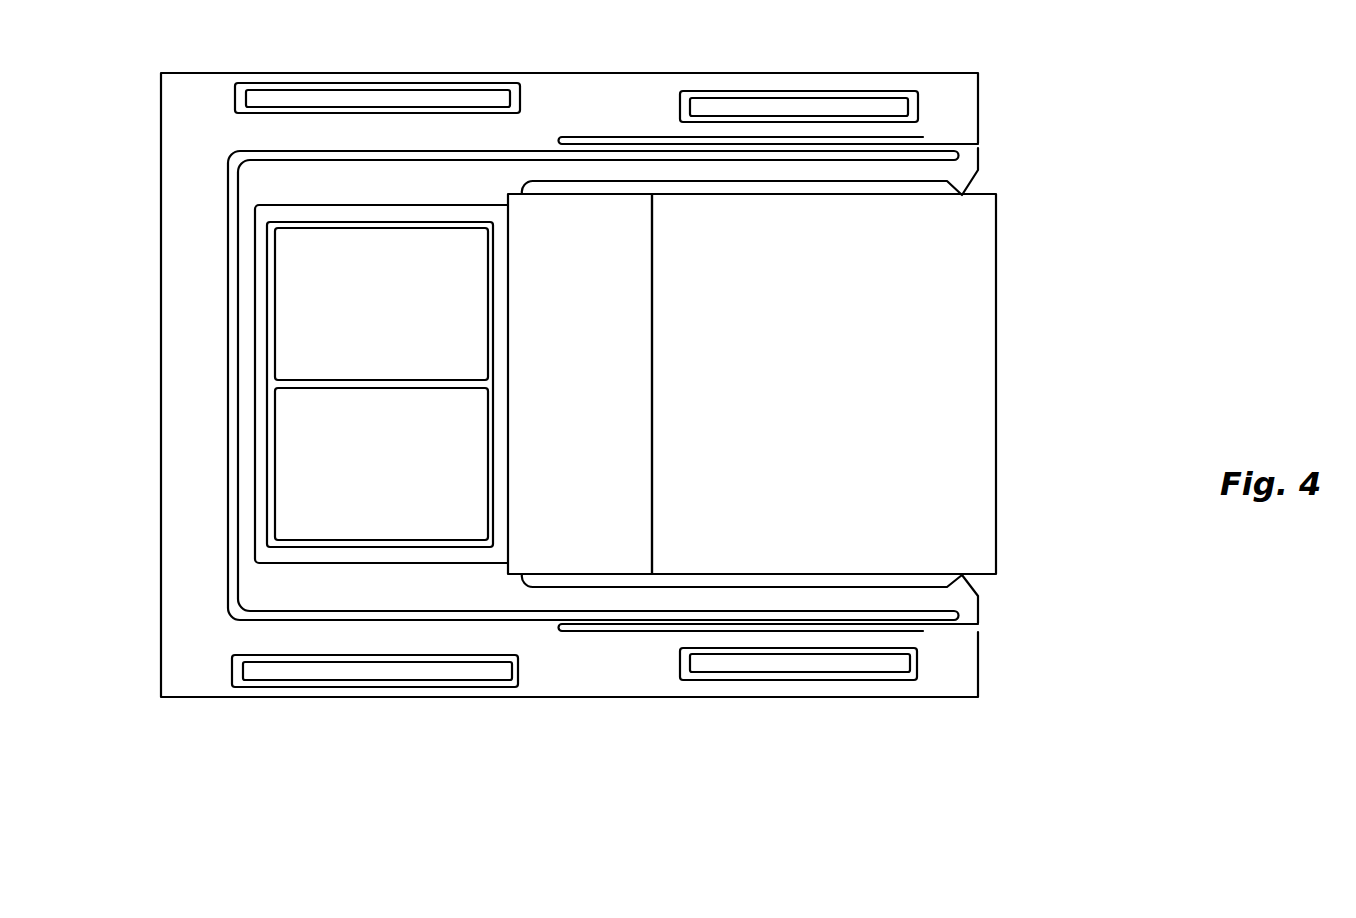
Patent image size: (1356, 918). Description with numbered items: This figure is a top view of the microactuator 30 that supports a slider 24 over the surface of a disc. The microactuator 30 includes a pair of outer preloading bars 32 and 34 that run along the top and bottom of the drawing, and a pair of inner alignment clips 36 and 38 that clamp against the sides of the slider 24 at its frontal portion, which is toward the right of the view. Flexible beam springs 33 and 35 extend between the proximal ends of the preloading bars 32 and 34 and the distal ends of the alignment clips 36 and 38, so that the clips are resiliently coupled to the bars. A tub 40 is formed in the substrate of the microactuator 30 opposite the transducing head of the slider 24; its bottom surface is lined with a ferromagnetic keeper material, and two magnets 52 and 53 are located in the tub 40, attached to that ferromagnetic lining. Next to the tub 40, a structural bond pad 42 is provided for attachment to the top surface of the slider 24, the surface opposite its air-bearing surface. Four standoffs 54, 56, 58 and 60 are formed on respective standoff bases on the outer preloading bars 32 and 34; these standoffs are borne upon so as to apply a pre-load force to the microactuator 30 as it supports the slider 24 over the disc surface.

The slider 24 is at (980, 357).
The microactuator 30 is at (126, 348).
The outer preloading bar 32 is at (970, 95).
The flexible beam spring 33 is at (922, 138).
The outer preloading bar 34 is at (962, 678).
The flexible beam spring 35 is at (942, 628).
The inner alignment clip 36 is at (985, 175).
The inner alignment clip 38 is at (975, 590).
The tub 40 is at (260, 220).
The structural bond pad 42 is at (608, 540).
The magnet 52 is at (396, 286).
The magnet 53 is at (396, 440).
The standoff 54 is at (312, 98).
The standoff 56 is at (785, 107).
The standoff 58 is at (327, 670).
The standoff 60 is at (858, 668).